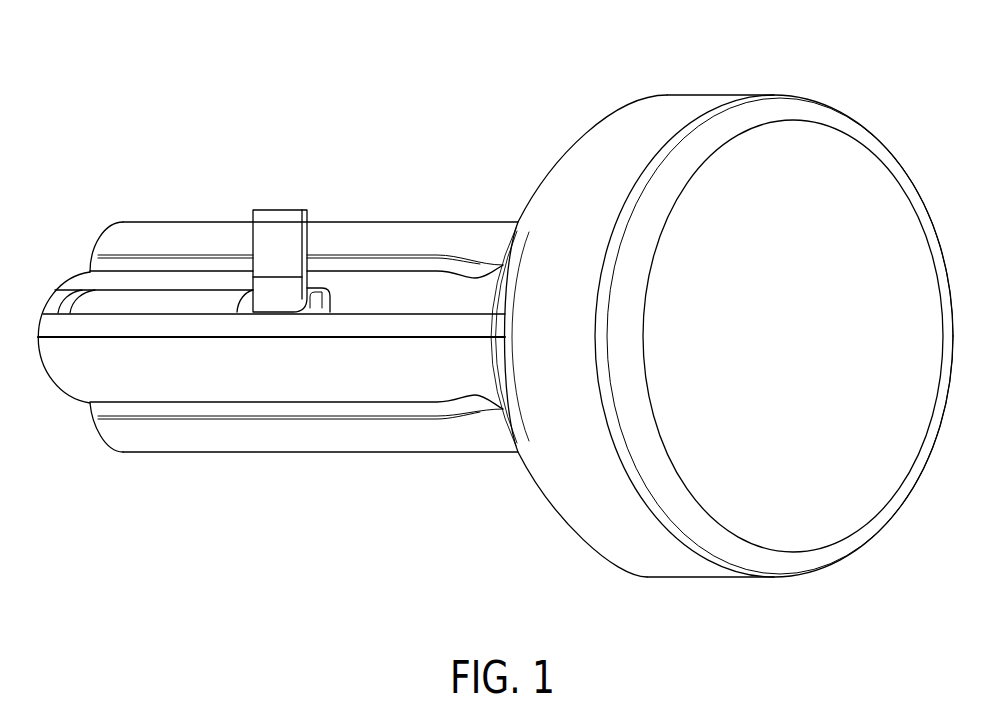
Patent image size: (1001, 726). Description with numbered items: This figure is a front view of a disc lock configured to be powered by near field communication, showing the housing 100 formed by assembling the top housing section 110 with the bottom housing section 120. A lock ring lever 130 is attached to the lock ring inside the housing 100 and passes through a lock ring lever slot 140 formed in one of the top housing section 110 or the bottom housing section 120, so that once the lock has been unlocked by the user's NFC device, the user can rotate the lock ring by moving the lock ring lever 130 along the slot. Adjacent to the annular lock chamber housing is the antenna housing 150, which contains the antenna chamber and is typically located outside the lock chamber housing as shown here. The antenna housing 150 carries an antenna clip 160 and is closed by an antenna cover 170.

The housing of the disc lock 100 is at (262, 105).
The top housing section 110 is at (191, 191).
The bottom housing section 120 is at (193, 453).
The lock ring lever 130 is at (320, 200).
The lock ring lever slot 140 is at (137, 298).
The antenna housing 150 is at (536, 514).
The antenna clip 160 is at (613, 150).
The antenna cover 170 is at (870, 195).